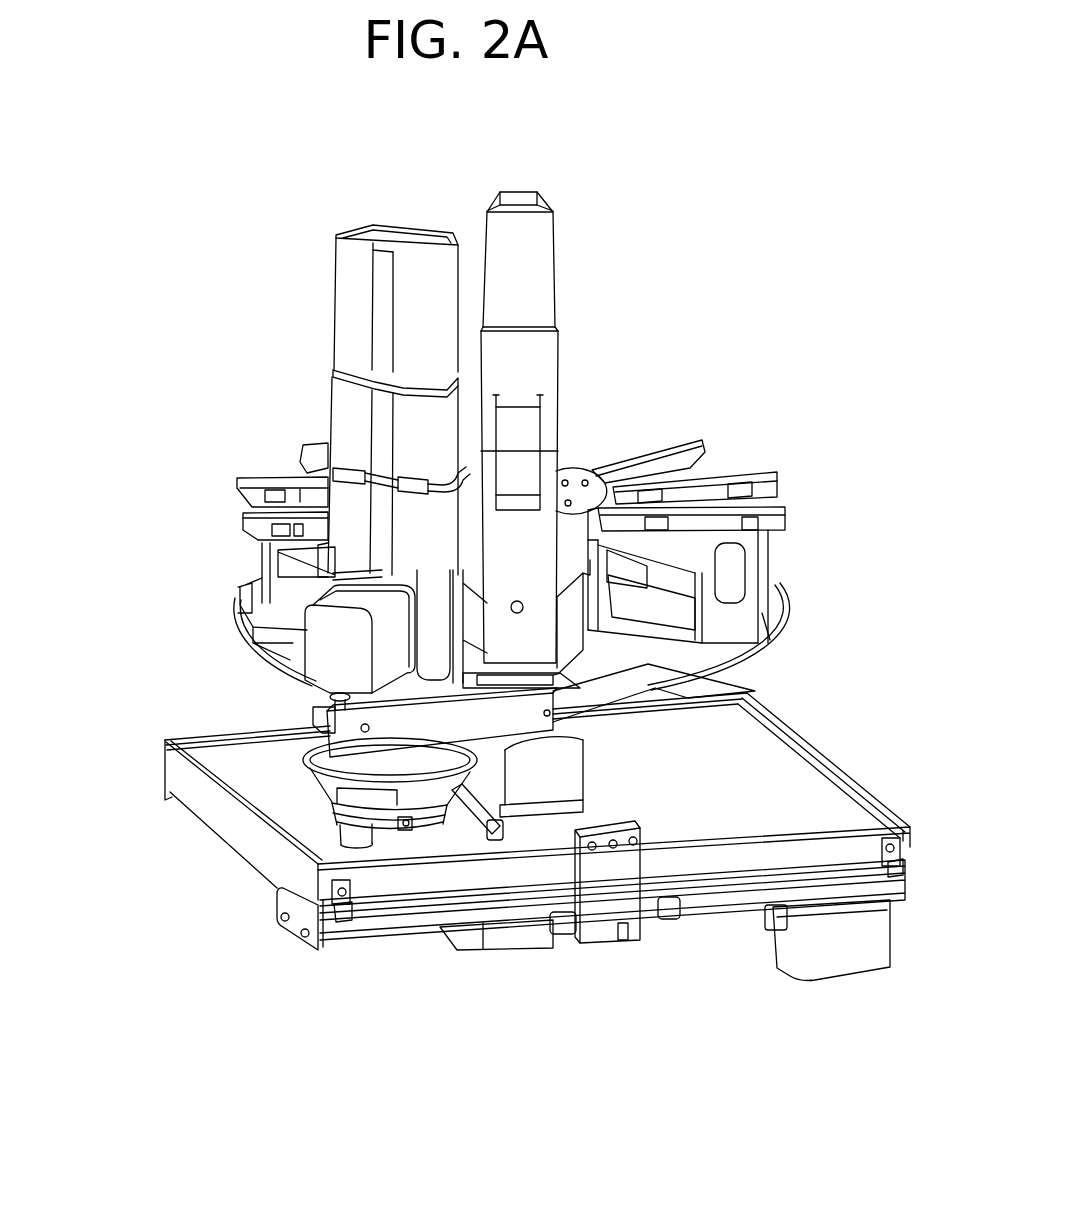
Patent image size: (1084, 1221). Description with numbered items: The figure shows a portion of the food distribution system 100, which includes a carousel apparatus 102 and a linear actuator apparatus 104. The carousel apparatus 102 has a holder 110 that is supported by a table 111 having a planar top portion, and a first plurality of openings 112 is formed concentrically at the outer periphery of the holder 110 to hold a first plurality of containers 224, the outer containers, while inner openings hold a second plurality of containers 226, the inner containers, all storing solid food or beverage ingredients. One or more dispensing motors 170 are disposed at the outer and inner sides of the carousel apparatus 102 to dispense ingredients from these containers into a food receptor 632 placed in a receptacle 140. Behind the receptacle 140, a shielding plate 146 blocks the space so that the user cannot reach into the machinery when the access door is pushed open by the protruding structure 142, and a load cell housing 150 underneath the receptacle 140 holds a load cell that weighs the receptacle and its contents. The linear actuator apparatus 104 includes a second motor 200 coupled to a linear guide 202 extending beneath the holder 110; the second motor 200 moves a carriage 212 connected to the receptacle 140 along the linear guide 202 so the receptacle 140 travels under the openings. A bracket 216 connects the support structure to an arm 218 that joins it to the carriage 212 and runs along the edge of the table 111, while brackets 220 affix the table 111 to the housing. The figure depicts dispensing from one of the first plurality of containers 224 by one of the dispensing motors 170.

The food distribution system 100 is at (142, 298).
The carousel apparatus 102 is at (812, 430).
The linear actuator apparatus 104 is at (264, 925).
The holder 110 is at (645, 445).
The table 111 is at (770, 727).
The first plurality of openings 112 is at (292, 647).
The receptacle 140 is at (352, 800).
The protruding structure 142 is at (287, 850).
The shielding plate 146 is at (487, 792).
The load cell housing 150 is at (337, 823).
The dispensing motors 170 is at (305, 632).
The second motor 200 is at (880, 937).
The linear guide 202 is at (722, 903).
The carriage 212 is at (530, 938).
The bracket 216 is at (600, 807).
The arm 218 is at (603, 910).
The brackets 220 is at (897, 860).
The first plurality of containers 224 is at (353, 337).
The second plurality of containers 226 is at (538, 294).
The food receptor 632 is at (307, 765).